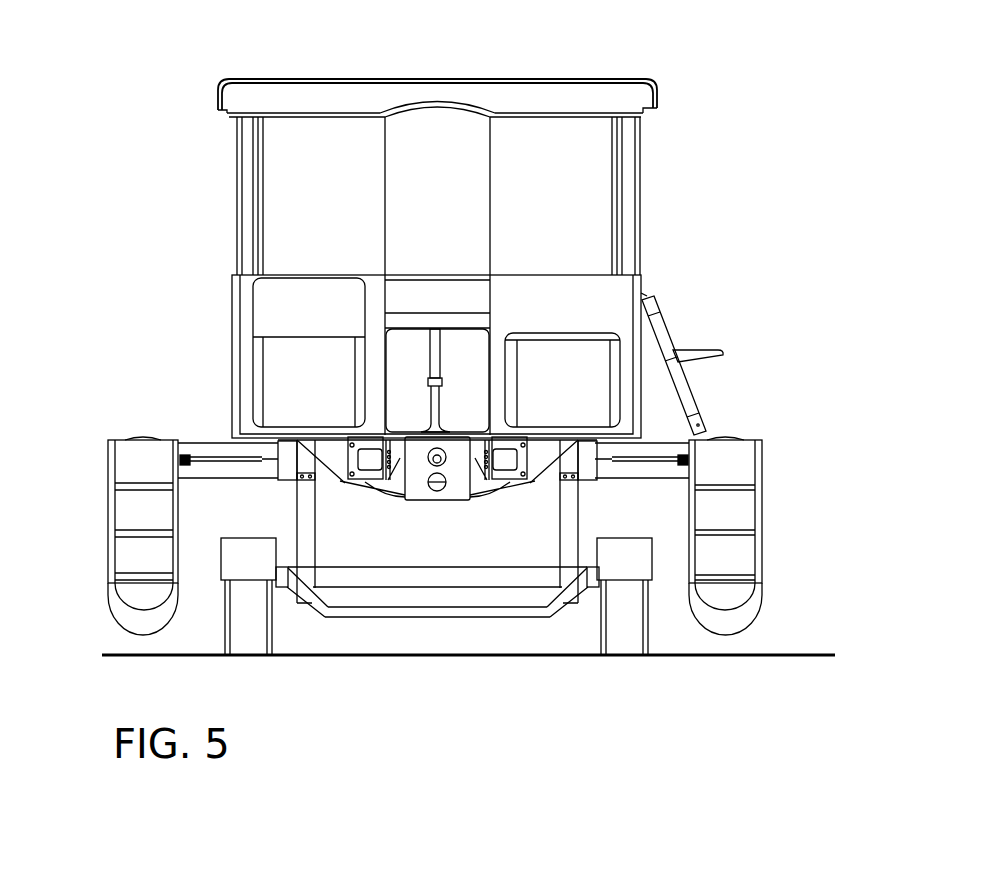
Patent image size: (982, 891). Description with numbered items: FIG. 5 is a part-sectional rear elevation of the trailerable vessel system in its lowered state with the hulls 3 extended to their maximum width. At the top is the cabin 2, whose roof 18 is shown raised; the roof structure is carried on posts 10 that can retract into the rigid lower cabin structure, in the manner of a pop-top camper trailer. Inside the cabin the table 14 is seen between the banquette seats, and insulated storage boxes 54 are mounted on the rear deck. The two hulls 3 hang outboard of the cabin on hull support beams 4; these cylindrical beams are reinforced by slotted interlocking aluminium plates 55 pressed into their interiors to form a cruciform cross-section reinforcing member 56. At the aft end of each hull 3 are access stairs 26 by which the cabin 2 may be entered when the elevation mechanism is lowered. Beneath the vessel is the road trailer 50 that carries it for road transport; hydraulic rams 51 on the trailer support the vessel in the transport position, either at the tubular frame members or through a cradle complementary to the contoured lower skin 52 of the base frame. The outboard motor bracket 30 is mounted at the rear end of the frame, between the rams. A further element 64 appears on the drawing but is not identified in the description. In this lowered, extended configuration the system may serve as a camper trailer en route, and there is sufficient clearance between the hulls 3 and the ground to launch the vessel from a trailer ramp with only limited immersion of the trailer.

The main cabin roof 18 is at (530, 79).
The posts 10 is at (628, 195).
The cabin 2 is at (643, 282).
The insulated storage boxes 54 is at (277, 365).
The table 14 is at (433, 366).
The slotted interlocking aluminium plates 55 is at (660, 455).
The hulls 3 is at (108, 508).
The access stairs 26 is at (733, 577).
The hull support beams 4 is at (650, 472).
The bracket 64 is at (297, 479).
The cruciform cross-section reinforcing member 56 is at (622, 470).
The road trailer 50 is at (493, 628).
The contoured lower skin 52 is at (378, 495).
The outboard motor bracket 30 is at (462, 495).
The hydraulic rams 51 is at (308, 568).